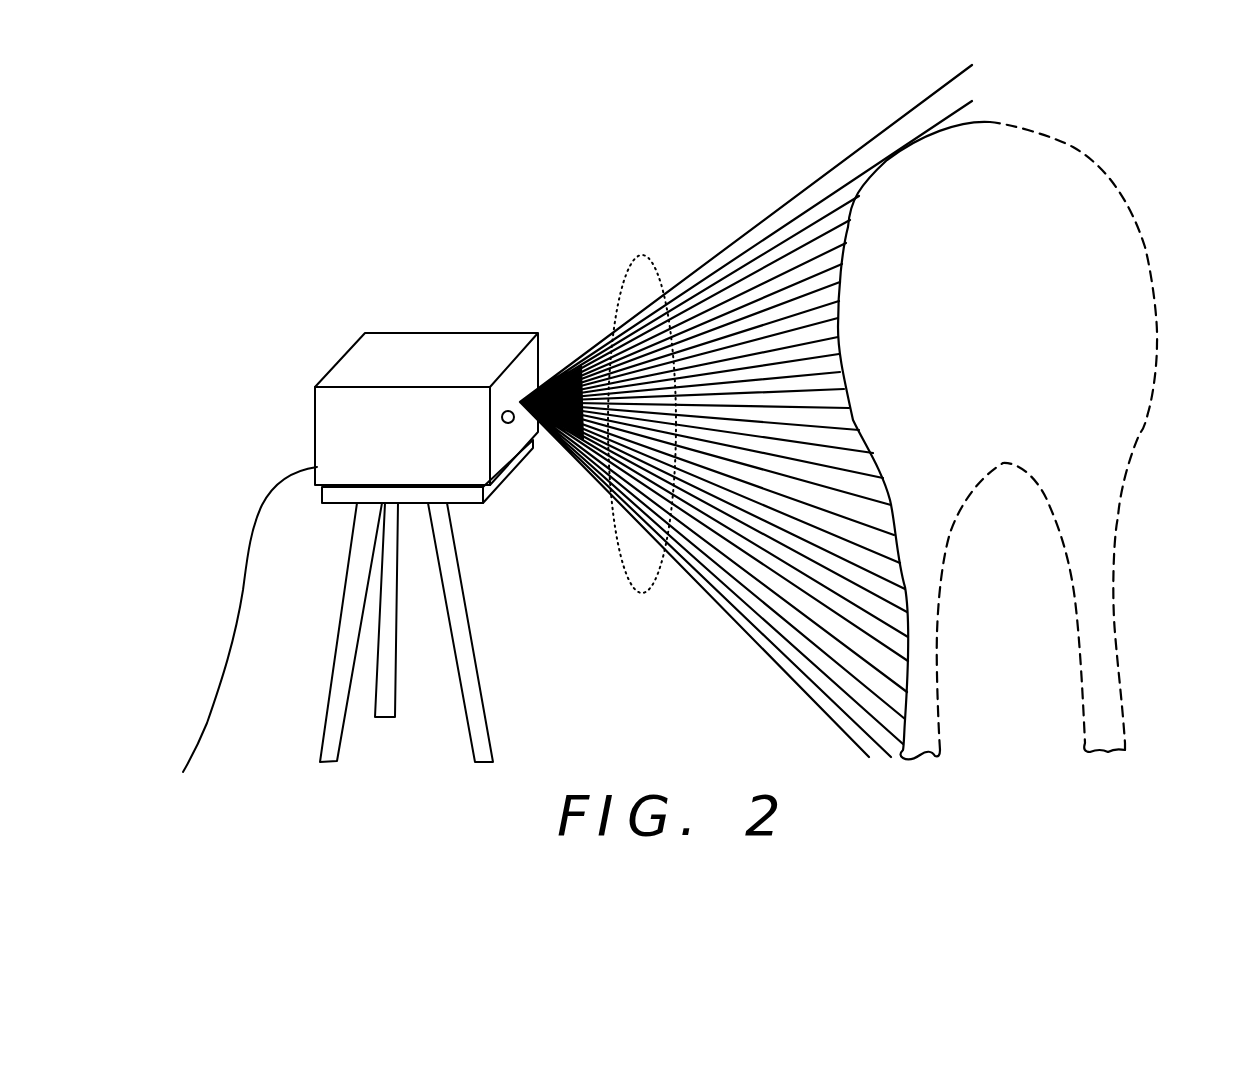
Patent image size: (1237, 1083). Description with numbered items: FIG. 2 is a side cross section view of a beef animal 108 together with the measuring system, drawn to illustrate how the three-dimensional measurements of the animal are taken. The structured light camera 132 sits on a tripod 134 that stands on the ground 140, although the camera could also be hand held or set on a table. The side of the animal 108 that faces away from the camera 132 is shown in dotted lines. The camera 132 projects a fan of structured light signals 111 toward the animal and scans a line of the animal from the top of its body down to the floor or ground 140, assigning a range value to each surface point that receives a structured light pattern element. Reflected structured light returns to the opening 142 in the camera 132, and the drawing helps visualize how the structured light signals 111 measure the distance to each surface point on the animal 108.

The animal 108 is at (1071, 186).
The structured light signals 111 is at (670, 252).
The structured light camera 132 is at (457, 333).
The tripod 134 is at (487, 720).
The ground surface 140 is at (243, 587).
The opening 142 is at (510, 423).